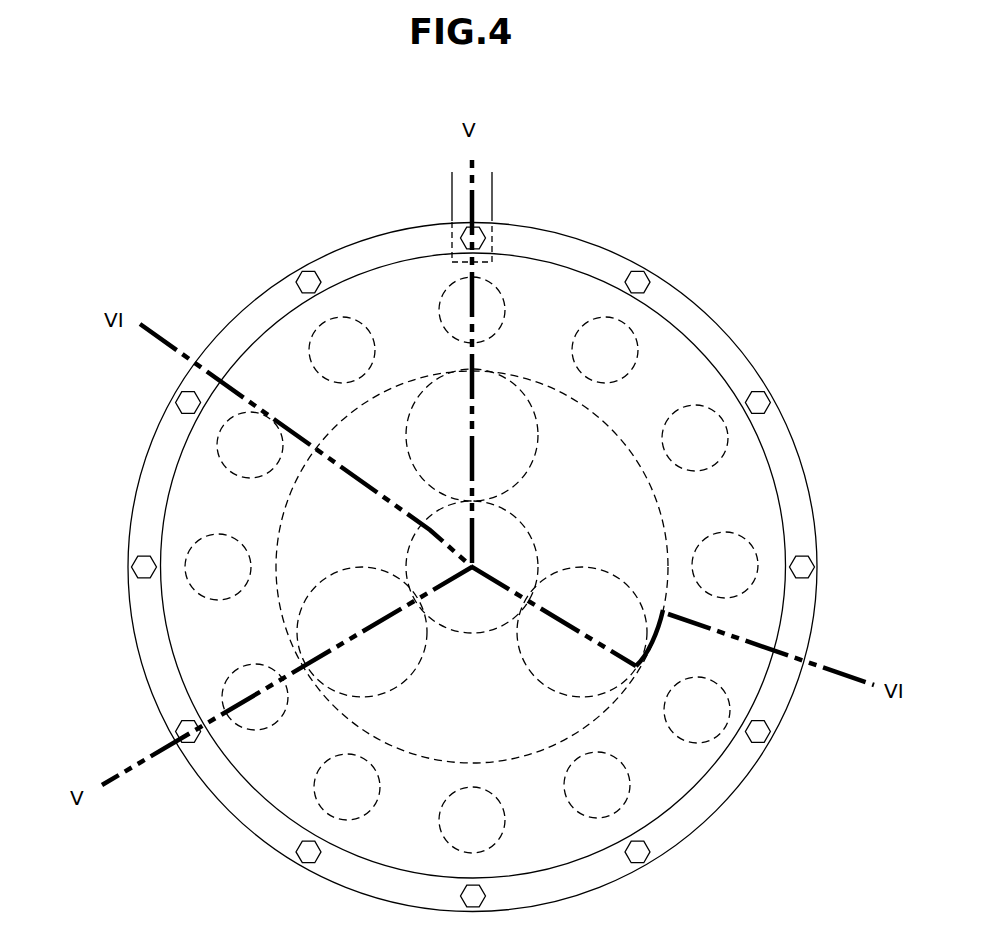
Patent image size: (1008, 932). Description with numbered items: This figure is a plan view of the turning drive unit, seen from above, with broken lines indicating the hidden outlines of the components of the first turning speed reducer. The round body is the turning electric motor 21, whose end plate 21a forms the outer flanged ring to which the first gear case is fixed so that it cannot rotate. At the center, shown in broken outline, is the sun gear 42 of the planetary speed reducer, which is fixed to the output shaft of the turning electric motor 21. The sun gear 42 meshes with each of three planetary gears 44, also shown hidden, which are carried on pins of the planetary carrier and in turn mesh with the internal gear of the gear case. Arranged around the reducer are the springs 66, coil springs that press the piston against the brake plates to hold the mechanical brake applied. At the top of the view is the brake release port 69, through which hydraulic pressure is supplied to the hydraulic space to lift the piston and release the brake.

The turning electric motor 21 is at (173, 477).
The end plate 21a is at (128, 572).
The sun gear 42 is at (533, 533).
The planetary gears 44 is at (626, 587).
The springs 66 is at (707, 405).
The brake release port 69 is at (452, 218).